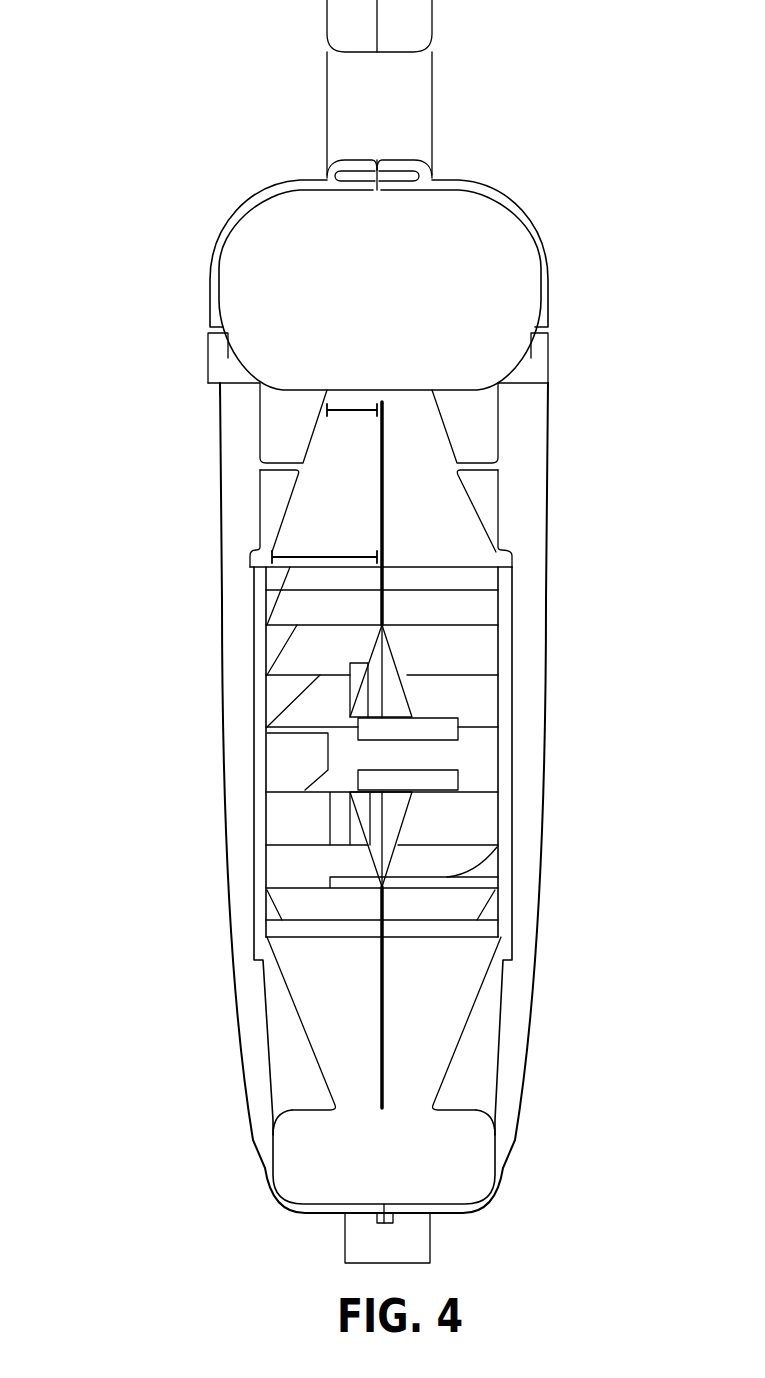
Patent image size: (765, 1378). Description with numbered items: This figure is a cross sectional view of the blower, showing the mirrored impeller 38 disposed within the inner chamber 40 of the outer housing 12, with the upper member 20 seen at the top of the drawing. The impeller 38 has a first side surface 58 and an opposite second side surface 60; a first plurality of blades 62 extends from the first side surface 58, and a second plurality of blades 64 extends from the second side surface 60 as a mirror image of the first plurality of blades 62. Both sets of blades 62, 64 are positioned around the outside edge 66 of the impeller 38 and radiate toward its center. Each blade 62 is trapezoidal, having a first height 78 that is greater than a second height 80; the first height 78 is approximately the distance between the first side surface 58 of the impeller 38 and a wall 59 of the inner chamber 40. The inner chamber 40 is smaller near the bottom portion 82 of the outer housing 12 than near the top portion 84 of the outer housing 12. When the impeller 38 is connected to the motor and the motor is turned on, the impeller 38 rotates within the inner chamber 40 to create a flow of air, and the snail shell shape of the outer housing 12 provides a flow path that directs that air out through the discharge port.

The outer housing 12 is at (211, 246).
The drive tube 20 is at (360, 105).
The top portion 84 is at (540, 237).
The second height 80 is at (357, 407).
The wall 59 is at (272, 416).
The second side surface 60 is at (387, 475).
The first side surface 58 is at (380, 456).
The first plurality of blades 62 is at (332, 487).
The second plurality of blades 64 is at (443, 508).
The first height 78 is at (330, 560).
The impeller 38 is at (367, 828).
The inner chamber 40 is at (453, 817).
The outside edge 66 is at (470, 1147).
The bottom portion 82 is at (490, 1198).